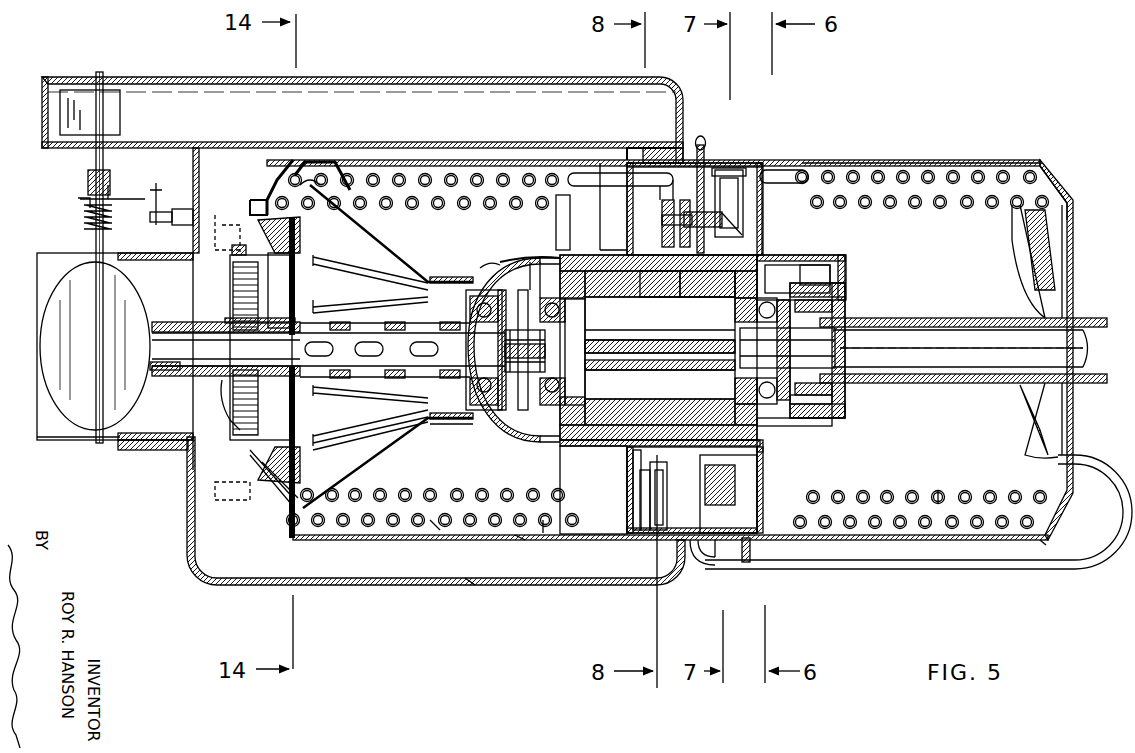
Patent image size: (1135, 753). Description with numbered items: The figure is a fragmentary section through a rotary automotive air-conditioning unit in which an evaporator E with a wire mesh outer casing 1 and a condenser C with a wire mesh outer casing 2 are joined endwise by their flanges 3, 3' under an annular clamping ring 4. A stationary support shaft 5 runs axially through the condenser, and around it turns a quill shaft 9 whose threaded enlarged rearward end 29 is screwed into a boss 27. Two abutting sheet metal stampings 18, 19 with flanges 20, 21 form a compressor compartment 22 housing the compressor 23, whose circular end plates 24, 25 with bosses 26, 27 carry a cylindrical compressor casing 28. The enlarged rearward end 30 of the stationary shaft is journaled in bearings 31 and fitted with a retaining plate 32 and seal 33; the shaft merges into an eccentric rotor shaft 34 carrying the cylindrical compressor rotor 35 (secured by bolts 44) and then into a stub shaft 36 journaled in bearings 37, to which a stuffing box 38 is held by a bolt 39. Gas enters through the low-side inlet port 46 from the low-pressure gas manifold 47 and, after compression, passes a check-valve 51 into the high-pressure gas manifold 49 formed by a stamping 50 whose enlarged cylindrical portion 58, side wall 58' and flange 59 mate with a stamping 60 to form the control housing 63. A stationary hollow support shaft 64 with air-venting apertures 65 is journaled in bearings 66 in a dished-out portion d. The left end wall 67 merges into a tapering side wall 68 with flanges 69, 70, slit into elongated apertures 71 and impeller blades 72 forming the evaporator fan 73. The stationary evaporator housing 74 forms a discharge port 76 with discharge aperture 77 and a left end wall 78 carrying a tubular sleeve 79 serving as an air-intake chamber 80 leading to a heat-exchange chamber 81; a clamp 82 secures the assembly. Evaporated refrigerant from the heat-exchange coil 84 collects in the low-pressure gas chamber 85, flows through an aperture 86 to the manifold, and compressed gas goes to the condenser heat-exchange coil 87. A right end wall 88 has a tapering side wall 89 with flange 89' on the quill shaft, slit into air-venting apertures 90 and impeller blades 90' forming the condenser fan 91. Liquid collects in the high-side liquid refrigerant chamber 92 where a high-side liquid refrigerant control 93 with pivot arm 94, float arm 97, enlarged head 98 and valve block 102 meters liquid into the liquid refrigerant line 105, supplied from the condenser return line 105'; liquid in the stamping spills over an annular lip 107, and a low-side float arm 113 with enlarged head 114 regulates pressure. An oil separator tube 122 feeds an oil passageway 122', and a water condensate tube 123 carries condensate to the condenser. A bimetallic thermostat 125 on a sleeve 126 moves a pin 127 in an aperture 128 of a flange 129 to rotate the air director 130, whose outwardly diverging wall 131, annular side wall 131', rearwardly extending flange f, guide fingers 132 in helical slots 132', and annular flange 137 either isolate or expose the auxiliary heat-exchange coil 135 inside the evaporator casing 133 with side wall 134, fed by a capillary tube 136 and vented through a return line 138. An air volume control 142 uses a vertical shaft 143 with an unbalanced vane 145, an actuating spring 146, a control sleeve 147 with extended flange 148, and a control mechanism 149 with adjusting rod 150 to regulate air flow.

The cylindrical outer casing 1 is at (522, 540).
The cylindrical outer casing 2 is at (895, 160).
The flange 3 is at (285, 388).
The flange 3' is at (1035, 571).
The annular clamping ring 4 is at (700, 147).
The stationary support shaft 5 is at (1083, 352).
The rotatable quill shaft 9 is at (1090, 322).
The sheet metal stamping 18 is at (667, 160).
The sheet metal stamping 19 is at (707, 150).
The flange 20 is at (600, 250).
The flange 21 is at (745, 255).
The compressor compartment 22 is at (615, 447).
The compressor 23 is at (580, 447).
The circular end plate 24 is at (585, 372).
The circular end plate 25 is at (748, 412).
The boss 26 is at (540, 262).
The boss 27 is at (812, 270).
The cylindrical compressor casing 28 is at (757, 447).
The diametrally enlarged rearward end 29 is at (840, 303).
The diametrally enlarged rearward end 30 is at (735, 373).
The bearings 31 is at (822, 425).
The retaining plate 32 is at (846, 395).
The seal 33 is at (845, 413).
The compressor rotor shaft 34 is at (636, 370).
The cylindrical compressor rotor 35 is at (672, 372).
The stationary stub shaft 36 is at (548, 392).
The bearings 37 is at (518, 412).
The stuffing box 38 is at (475, 417).
The bolt 39 is at (503, 350).
The bolts 44 is at (45, 350).
The low-side inlet port 46 is at (565, 290).
The low-pressure gas manifold 47 is at (540, 270).
The high-pressure gas manifold 49 is at (812, 438).
The sheet metal stamping 50 is at (828, 255).
The check-valve 51 is at (765, 272).
The diametrally enlarged cylindrical portion 58 is at (747, 490).
The annular cylindrical side wall 58' is at (711, 571).
The flange 59 is at (690, 565).
The sheet metal cylindrical stamping 60 is at (628, 165).
The control housing 63 is at (635, 527).
The stationary hollow support shaft 64 is at (160, 378).
The air-venting apertures 65 is at (300, 348).
The bearings 66 is at (478, 310).
The left end wall 67 is at (335, 162).
The side wall 68 is at (345, 245).
The annular flange 69 is at (432, 420).
The annular flange 70 is at (434, 426).
The elongated apertures 71 is at (372, 440).
The air impeller blades 72 is at (405, 270).
The evaporator fan 73 is at (392, 440).
The outer cylindrical evaporator housing 74 is at (468, 585).
The discharge port 76 is at (47, 147).
The discharge aperture 77 is at (50, 100).
The left end wall 78 is at (187, 502).
The tubular sleeve 79 is at (83, 438).
The air-intake chamber 80 is at (48, 418).
The heat-exchange chamber 81 is at (375, 578).
The clamp 82 is at (185, 453).
The heat-exchange coil 84 is at (543, 533).
The low-pressure gas chamber 85 is at (540, 443).
The aperture 86 is at (570, 205).
The condenser heat-exchange coil 87 is at (940, 488).
The right end wall 88 is at (1072, 205).
The side wall 89 is at (1087, 261).
The annular flange 89' is at (1064, 261).
The air-venting apertures 90 is at (1069, 420).
The air-impeller blades 90' is at (1020, 250).
The condenser fan 91 is at (1019, 418).
The high-side liquid refrigerant chamber 92 is at (745, 562).
The high-side liquid refrigerant control 93 is at (755, 170).
The pivot arm 94 is at (712, 218).
The float arm 97 is at (730, 230).
The enlarged head 98 is at (740, 165).
The cylindrical valve block 102 is at (707, 284).
The liquid refrigerant line 105 is at (630, 210).
The condenser return line 105' is at (798, 152).
The annular lip 107 is at (660, 284).
The float arm 113 is at (652, 502).
The enlarged head 114 is at (660, 535).
The oil separator tube 122 is at (507, 246).
The oil passageway 122' is at (660, 348).
The water condensate tube 123 is at (893, 572).
The bimetallic thermostat 125 is at (237, 326).
The sleeve 126 is at (232, 322).
The pin 127 is at (290, 268).
The aperture 128 is at (290, 283).
The flange 129 is at (300, 237).
The air director 130 is at (298, 430).
The outwardly diverging wall 131 is at (251, 477).
The annular side wall 131' is at (267, 502).
The guide fingers 132 is at (228, 235).
The helical slots 132' is at (213, 405).
The evaporator casing 133 is at (282, 173).
The side wall 134 is at (268, 197).
The auxiliary heat-exchange coil 135 is at (295, 165).
The capillary tube 136 is at (305, 178).
The annular flange 137 is at (250, 500).
The return line 138 is at (432, 262).
The air volume control 142 is at (72, 203).
The vertical shaft 143 is at (104, 70).
The unbalanced vane 145 is at (118, 108).
The actuating spring 146 is at (84, 228).
The control sleeve 147 is at (90, 177).
The extended flange 148 is at (118, 195).
The control mechanism 149 is at (158, 185).
The adjusting rod 150 is at (150, 217).
The condenser C is at (940, 175).
The dished-out portion d is at (480, 272).
The evaporator E is at (435, 525).
The rearwardly extending flange f is at (195, 467).